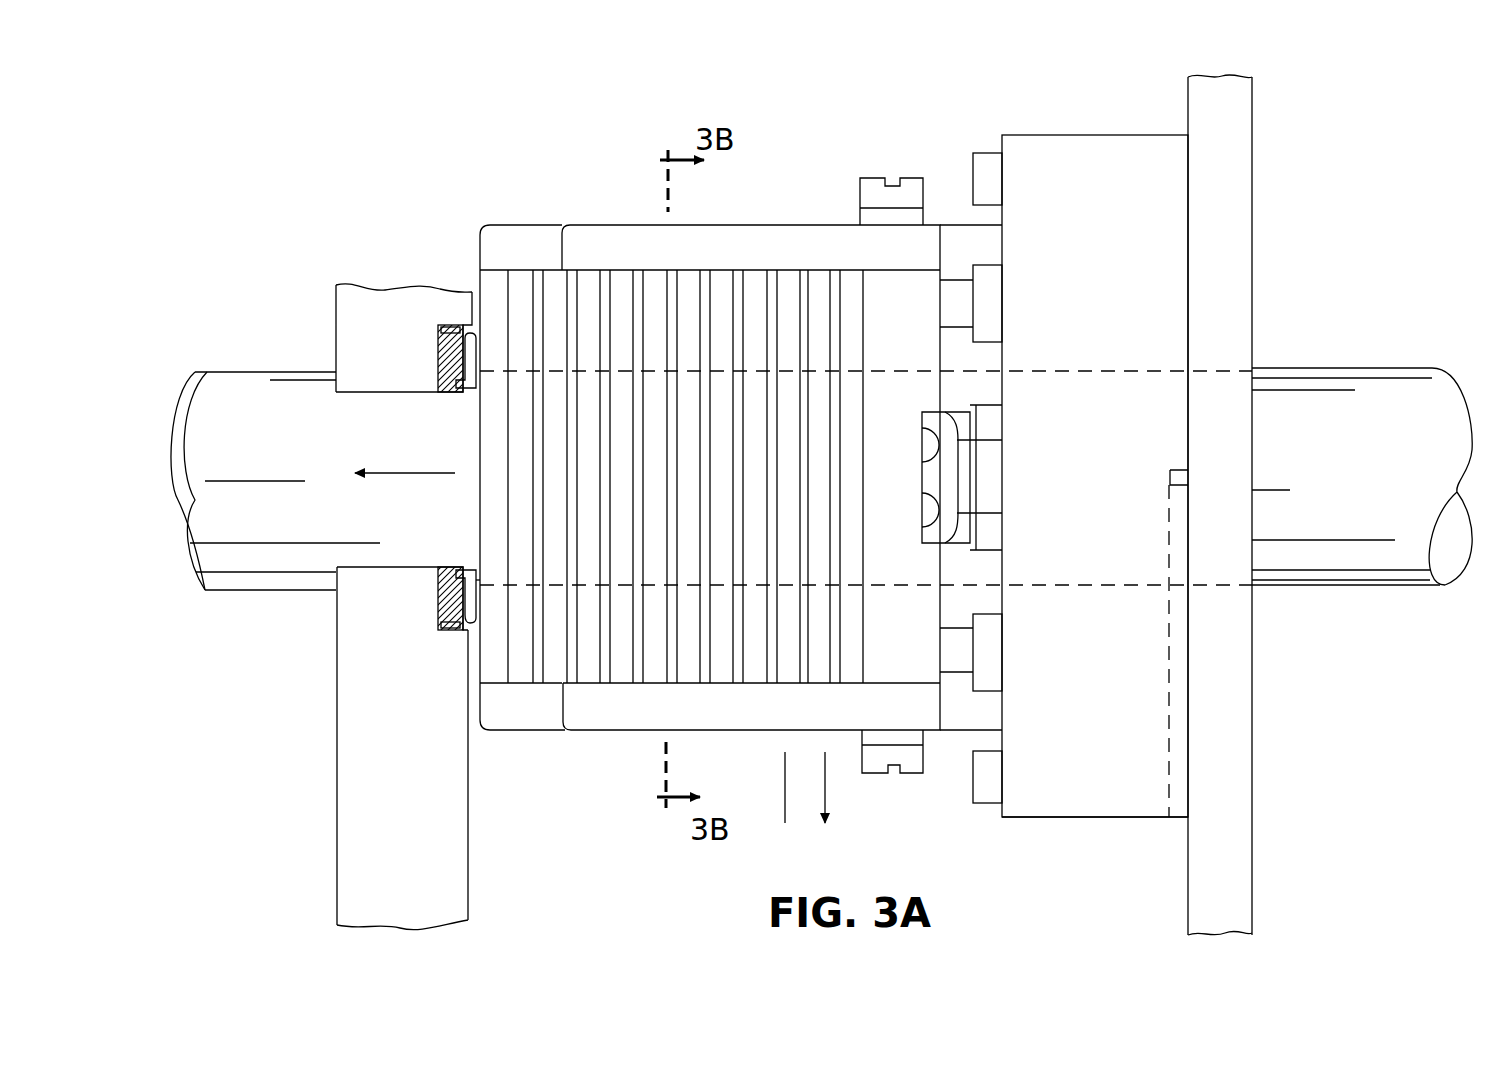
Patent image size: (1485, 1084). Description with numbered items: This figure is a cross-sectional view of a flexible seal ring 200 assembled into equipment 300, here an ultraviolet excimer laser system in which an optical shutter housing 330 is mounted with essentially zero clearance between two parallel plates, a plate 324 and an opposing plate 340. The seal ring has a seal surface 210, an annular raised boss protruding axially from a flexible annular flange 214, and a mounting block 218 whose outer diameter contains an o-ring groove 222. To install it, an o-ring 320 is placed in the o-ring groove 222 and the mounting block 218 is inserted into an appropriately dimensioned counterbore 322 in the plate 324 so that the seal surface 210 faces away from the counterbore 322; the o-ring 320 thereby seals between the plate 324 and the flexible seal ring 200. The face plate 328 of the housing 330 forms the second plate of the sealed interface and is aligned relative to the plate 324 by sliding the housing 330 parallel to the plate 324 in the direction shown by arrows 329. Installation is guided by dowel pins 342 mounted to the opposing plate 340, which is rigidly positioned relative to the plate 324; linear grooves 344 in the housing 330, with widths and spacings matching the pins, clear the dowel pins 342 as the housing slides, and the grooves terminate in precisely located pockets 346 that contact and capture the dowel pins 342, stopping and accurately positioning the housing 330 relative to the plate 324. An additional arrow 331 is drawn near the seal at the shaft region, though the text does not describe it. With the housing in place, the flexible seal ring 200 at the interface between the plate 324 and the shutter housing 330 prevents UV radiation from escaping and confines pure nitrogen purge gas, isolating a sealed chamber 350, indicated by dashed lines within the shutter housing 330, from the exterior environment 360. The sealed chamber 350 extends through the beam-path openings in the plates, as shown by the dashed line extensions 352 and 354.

The flexible seal ring 200 is at (446, 397).
The seal surface 210 is at (472, 615).
The flexible annular flange 214 is at (478, 606).
The mounting block 218 is at (450, 567).
The o-ring groove 222 is at (438, 336).
The equipment 300 is at (825, 434).
The o-ring 320 is at (371, 340).
The counterbore 322 is at (368, 707).
The plate 324 is at (443, 709).
The face plate 328 is at (481, 282).
The arrows 329 is at (827, 790).
The housing 330 is at (806, 204).
The flow direction arrow 331 is at (420, 473).
The opposing plate 340 is at (1127, 505).
The dowel pins 342 is at (1181, 470).
The linear grooves 344 is at (1166, 824).
The pockets 346 is at (1170, 476).
The sealed chamber 350 is at (685, 410).
The dashed line extension 352 is at (1327, 398).
The dashed line extension 354 is at (263, 568).
The exterior environment 360 is at (825, 412).